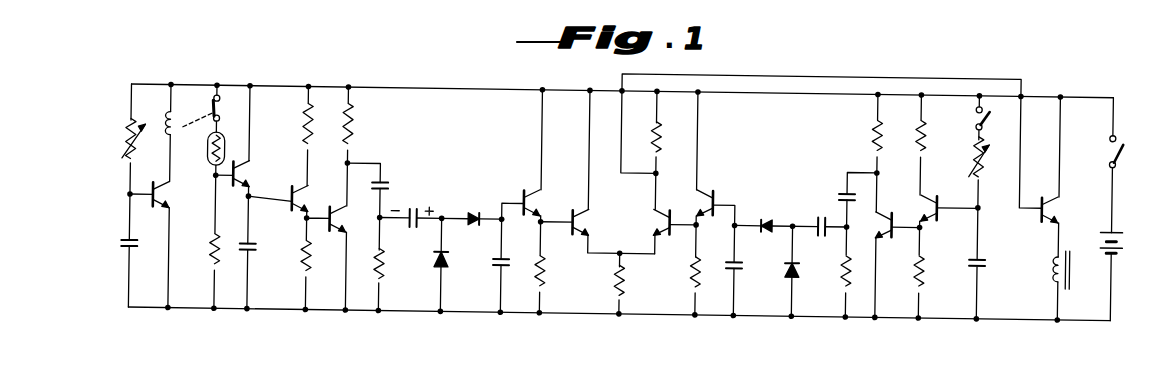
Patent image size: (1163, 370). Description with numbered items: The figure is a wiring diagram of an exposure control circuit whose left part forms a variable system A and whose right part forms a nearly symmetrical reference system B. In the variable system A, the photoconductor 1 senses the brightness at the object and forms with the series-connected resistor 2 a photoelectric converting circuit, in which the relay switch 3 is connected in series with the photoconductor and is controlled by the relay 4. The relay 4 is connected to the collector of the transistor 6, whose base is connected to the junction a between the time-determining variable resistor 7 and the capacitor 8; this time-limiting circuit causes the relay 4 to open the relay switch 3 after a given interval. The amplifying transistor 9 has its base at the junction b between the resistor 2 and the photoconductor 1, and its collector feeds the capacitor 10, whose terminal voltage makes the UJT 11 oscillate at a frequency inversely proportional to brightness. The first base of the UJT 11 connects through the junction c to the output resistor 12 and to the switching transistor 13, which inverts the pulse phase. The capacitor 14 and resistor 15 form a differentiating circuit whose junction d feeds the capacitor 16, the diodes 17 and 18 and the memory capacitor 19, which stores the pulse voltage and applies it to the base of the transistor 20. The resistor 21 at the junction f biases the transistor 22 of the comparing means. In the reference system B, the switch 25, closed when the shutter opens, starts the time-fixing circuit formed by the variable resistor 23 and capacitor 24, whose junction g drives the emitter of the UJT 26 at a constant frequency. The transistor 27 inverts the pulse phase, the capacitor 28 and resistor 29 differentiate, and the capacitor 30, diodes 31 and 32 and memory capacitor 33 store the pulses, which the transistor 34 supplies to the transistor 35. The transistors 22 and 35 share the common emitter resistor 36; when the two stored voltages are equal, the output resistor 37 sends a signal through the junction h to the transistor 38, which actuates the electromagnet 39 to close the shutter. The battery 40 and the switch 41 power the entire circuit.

The photoconductor 1 is at (207, 157).
The resistor 2 is at (208, 261).
The relay switch 3 is at (219, 112).
The relay 4 is at (168, 134).
The transistor 6 is at (163, 208).
The time-determining variable resistor 7 is at (125, 149).
The capacitor 8 is at (121, 245).
The amplifying transistor 9 is at (242, 174).
The capacitor 10 is at (254, 251).
The UJT 11 is at (290, 211).
The output resistor 12 is at (304, 266).
The switching transistor 13 is at (341, 231).
The capacitor 14 is at (388, 184).
The resistor 15 is at (384, 272).
The capacitor 16 is at (416, 225).
The diode 17 is at (471, 232).
The diode 18 is at (446, 265).
The memory capacitor 19 is at (498, 262).
The transistor 20 is at (531, 188).
The resistor 21 is at (553, 275).
The transistor 22 is at (580, 205).
The variable resistor 23 is at (973, 155).
The capacitor 24 is at (989, 255).
The switch 25 is at (975, 110).
The UJT 26 is at (935, 218).
The transistor 27 is at (886, 240).
The capacitor 28 is at (845, 188).
The resistor 29 is at (843, 274).
The capacitor 30 is at (823, 205).
The diode 31 is at (768, 214).
The diode 32 is at (788, 270).
The memory capacitor 33 is at (730, 268).
The transistor 34 is at (708, 194).
The transistor 35 is at (668, 219).
The common emitter resistor 36 is at (636, 284).
The output resistor 37 is at (662, 142).
The transistor 38 is at (1057, 205).
The electromagnet 39 is at (1052, 267).
The battery 40 is at (1107, 242).
The switch 41 is at (1108, 140).
The junction a is at (128, 194).
The junction b is at (214, 181).
The junction c is at (310, 214).
The junction d is at (378, 216).
The junction f is at (537, 219).
The junction g is at (981, 197).
The junction h is at (652, 171).
The variable system A is at (188, 325).
The reference system B is at (926, 312).